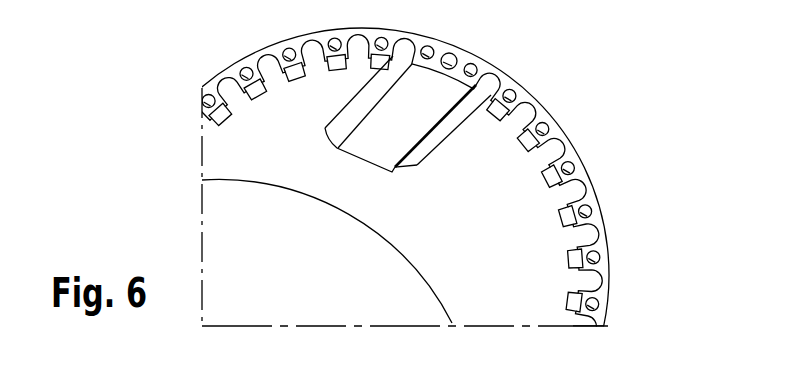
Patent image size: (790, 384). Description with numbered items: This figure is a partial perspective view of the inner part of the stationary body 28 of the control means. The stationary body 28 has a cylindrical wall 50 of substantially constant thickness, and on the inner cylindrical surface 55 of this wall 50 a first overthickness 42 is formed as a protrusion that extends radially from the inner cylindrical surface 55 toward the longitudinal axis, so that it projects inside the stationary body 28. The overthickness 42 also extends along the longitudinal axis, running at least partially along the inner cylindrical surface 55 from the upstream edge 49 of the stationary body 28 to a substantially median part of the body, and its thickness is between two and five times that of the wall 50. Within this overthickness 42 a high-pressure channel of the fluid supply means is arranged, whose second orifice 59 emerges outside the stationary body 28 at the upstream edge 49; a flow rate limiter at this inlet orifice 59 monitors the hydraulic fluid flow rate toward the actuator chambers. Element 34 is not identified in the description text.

The stationary body 28 is at (603, 153).
The rolling elements 34 is at (401, 155).
The first overthickness 42 is at (388, 113).
The upstream edge 49 is at (530, 98).
The cylindrical wall 50 is at (233, 137).
The inner cylindrical surface 55 is at (530, 257).
The second orifice 59 is at (455, 60).